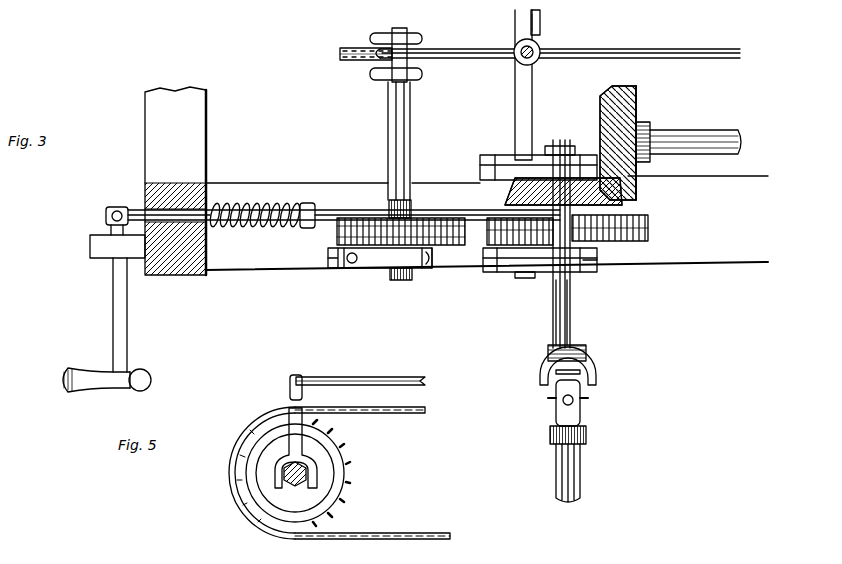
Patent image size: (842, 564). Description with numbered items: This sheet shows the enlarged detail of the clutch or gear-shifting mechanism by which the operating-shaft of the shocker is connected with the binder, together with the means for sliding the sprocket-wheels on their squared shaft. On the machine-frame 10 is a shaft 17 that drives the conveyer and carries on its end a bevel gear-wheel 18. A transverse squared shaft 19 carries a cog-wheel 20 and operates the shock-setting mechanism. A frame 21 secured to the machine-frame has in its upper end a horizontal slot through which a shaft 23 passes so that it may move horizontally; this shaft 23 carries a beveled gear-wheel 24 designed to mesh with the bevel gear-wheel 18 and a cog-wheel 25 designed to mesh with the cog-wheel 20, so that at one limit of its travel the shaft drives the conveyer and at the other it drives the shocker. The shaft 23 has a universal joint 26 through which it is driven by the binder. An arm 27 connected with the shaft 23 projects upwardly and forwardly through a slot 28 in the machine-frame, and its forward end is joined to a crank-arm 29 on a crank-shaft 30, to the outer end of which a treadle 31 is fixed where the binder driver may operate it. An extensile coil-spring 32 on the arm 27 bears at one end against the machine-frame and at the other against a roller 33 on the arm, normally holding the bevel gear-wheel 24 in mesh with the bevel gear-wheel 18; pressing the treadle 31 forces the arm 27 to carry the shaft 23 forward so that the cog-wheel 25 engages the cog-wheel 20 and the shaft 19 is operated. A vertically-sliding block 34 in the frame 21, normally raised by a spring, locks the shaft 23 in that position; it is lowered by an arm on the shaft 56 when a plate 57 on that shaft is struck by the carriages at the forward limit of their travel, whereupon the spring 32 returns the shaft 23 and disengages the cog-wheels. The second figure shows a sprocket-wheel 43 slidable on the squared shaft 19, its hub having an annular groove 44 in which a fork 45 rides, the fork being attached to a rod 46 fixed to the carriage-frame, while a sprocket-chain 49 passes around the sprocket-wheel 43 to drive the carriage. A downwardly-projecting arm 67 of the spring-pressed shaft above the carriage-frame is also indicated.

In FIG. 3, the machine-frame 10 is at (185, 278).
In FIG. 3, the shaft 17 is at (705, 132).
In FIG. 3, the bevel gear-wheel 18 is at (652, 89).
In FIG. 3, the shaft 19 is at (410, 112).
In FIG. 5, the shaft 19 is at (296, 487).
In FIG. 3, the cog-wheel 20 is at (380, 248).
In FIG. 3, the frame 21 is at (598, 262).
In FIG. 3, the shaft 23 is at (570, 320).
In FIG. 3, the beveled gear-wheel 24 is at (620, 200).
In FIG. 3, the cog-wheel 25 is at (648, 228).
In FIG. 3, the universal joint 26 is at (592, 380).
In FIG. 3, the arm 27 is at (553, 270).
In FIG. 3, the slot 28 is at (218, 205).
In FIG. 3, the crank-arm 29 is at (106, 215).
In FIG. 3, the crank-shaft 30 is at (113, 300).
In FIG. 3, the treadle 31 is at (84, 374).
In FIG. 3, the extensile coil-spring 32 is at (258, 204).
In FIG. 3, the roller 33 is at (308, 204).
In FIG. 3, the vertically-sliding block 34 is at (585, 272).
In FIG. 3, the sprocket-wheel 43 is at (372, 62).
In FIG. 5, the sprocket-wheel 43 is at (344, 470).
In FIG. 3, the annular groove 44 is at (412, 47).
In FIG. 5, the annular groove 44 is at (305, 470).
In FIG. 3, the fork 45 is at (399, 30).
In FIG. 5, the fork 45 is at (290, 388).
In FIG. 3, the rod 46 is at (586, 50).
In FIG. 5, the rod 46 is at (372, 378).
In FIG. 5, the sprocket-chain 49 is at (394, 531).
In FIG. 3, the shaft 56 is at (515, 22).
In FIG. 3, the plate 57 is at (540, 18).
In FIG. 3, the downwardly-projecting arm 67 is at (533, 62).